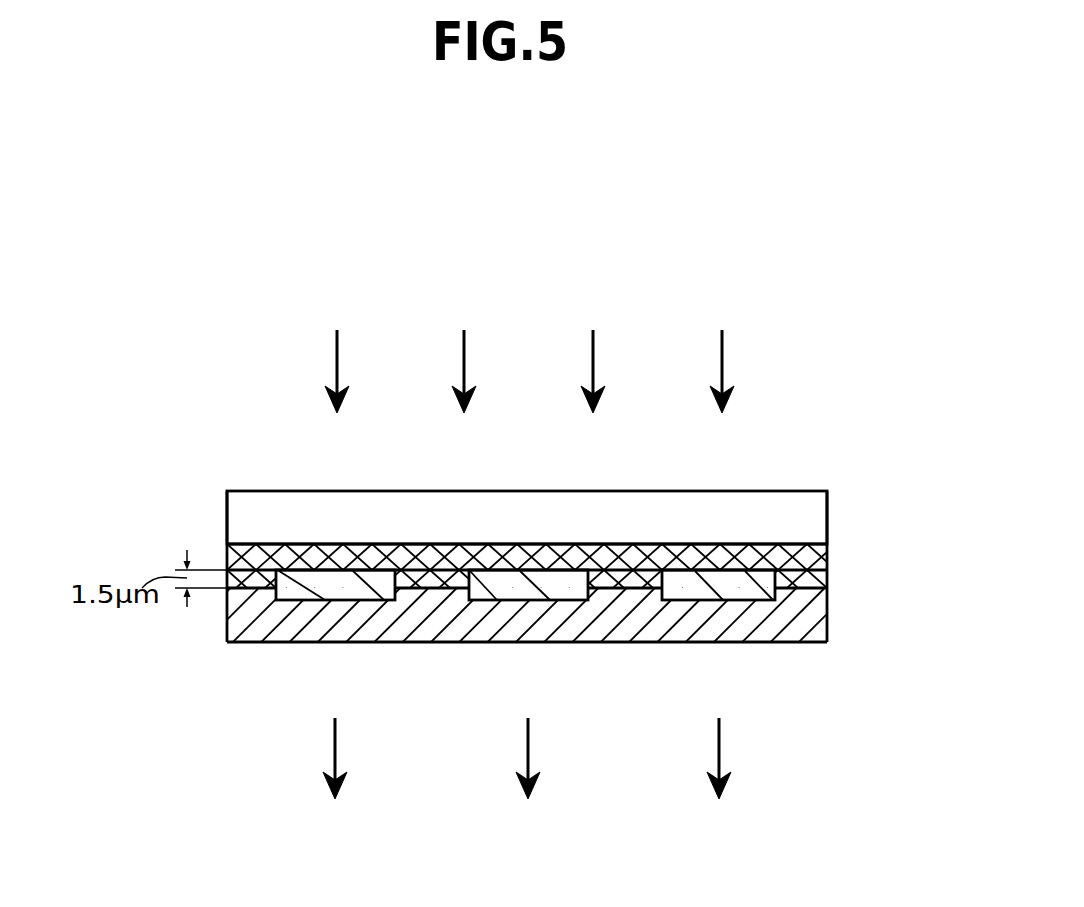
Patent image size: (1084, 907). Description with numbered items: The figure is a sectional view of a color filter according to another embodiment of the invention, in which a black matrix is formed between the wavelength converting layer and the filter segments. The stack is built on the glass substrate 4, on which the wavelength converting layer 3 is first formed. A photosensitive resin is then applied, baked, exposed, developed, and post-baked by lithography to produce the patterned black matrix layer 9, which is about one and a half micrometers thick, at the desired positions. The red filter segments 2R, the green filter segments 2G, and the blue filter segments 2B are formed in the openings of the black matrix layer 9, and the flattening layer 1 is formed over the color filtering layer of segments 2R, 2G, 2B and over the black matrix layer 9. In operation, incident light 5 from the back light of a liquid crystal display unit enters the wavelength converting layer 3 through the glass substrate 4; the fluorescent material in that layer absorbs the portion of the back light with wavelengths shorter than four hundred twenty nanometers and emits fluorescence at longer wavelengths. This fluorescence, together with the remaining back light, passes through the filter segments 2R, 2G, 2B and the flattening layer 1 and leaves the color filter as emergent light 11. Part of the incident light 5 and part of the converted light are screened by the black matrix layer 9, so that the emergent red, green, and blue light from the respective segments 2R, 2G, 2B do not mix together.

The flattening layer 1 is at (792, 632).
The green filter segment 2G is at (352, 583).
The red filter segment 2R is at (536, 573).
The blue filter segment 2B is at (737, 582).
The wavelength converting layer 3 is at (650, 565).
The glass substrate 4 is at (277, 535).
The incident light 5 is at (529, 333).
The black matrix layer 9 is at (805, 585).
The emergent light 11 is at (527, 793).